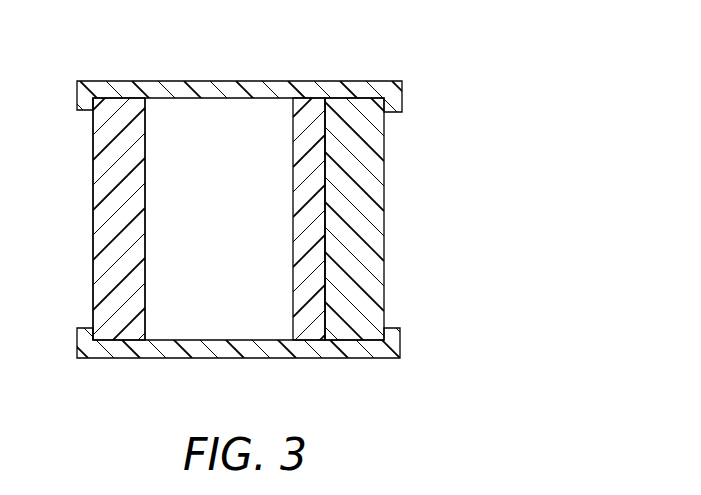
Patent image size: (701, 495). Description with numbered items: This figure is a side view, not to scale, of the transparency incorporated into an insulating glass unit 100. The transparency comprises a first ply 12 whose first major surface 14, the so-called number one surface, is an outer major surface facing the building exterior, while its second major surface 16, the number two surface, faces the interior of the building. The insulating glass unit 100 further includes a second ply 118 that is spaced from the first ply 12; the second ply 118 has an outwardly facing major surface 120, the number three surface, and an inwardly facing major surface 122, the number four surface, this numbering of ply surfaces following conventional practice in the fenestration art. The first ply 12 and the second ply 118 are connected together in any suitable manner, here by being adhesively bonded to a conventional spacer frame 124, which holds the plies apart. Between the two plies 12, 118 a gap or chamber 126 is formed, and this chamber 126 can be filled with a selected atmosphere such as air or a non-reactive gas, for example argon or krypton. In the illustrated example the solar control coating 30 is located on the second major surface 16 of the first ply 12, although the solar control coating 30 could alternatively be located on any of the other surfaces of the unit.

The insulating glass unit 100 is at (530, 185).
The spacer frame 124 is at (405, 93).
The first ply 12 is at (354, 334).
The first major surface 14 is at (396, 288).
The solar control coating 30 is at (307, 115).
The second major surface 16 is at (313, 289).
The second ply 118 is at (113, 333).
The outwardly facing major surface 120 is at (156, 302).
The inwardly facing major surface 122 is at (82, 271).
The chamber 126 is at (213, 125).